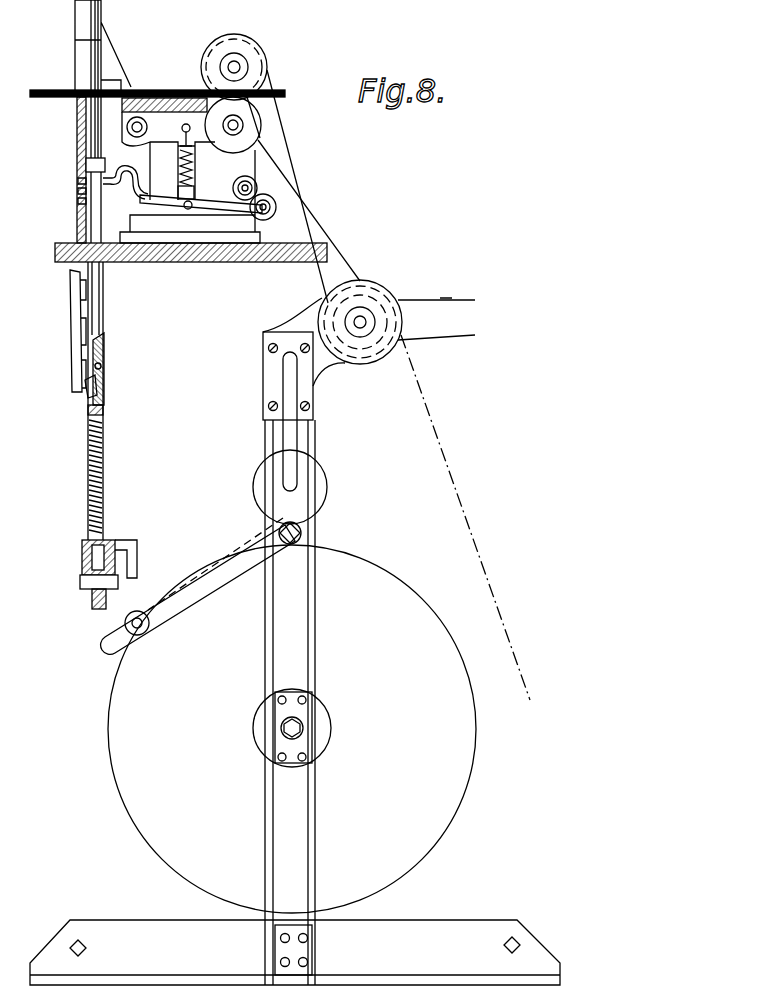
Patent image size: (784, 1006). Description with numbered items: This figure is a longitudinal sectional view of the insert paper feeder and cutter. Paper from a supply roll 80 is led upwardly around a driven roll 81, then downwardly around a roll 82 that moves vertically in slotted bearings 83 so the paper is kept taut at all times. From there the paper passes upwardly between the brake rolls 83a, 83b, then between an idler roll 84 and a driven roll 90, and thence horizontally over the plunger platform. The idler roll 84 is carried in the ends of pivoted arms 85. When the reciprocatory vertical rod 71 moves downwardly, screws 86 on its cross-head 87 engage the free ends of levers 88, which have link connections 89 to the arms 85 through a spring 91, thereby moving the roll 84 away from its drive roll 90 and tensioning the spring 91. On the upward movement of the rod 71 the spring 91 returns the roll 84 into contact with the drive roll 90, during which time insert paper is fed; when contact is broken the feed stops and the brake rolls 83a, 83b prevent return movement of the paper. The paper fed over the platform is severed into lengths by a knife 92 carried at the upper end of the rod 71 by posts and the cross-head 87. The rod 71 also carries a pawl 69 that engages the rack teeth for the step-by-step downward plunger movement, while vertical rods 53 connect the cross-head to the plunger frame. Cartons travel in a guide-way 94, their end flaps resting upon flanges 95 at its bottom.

The knife 92 is at (72, 73).
The guide-way 94 is at (76, 133).
The cross-head 87 is at (86, 164).
The flanges 95 is at (62, 245).
The pivoted arms 85 is at (150, 120).
The screws 86 is at (104, 176).
The levers 88 is at (148, 204).
The link connections 89 is at (193, 166).
The spring 91 is at (195, 186).
The driven roll 90 is at (262, 48).
The idler roll 84 is at (257, 122).
The brake roll 83a is at (253, 180).
The brake roll 83b is at (256, 197).
The driven roll 81 is at (380, 288).
The slotted bearings 83 is at (292, 442).
The roll 82 is at (322, 492).
The supply roll 80 is at (292, 729).
The reciprocatory vertical rod 71 is at (100, 357).
The vertical rods 53 is at (80, 287).
The pawl 69 is at (85, 395).